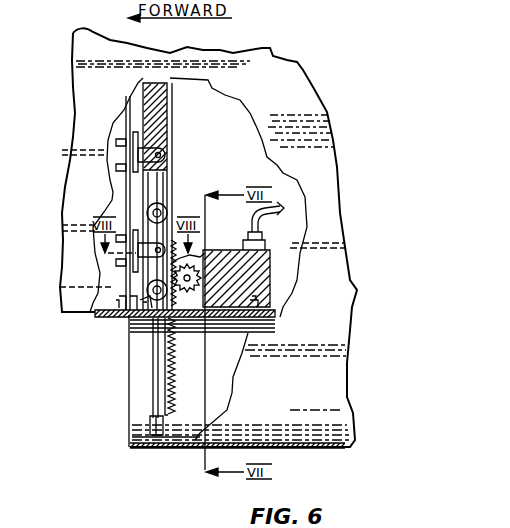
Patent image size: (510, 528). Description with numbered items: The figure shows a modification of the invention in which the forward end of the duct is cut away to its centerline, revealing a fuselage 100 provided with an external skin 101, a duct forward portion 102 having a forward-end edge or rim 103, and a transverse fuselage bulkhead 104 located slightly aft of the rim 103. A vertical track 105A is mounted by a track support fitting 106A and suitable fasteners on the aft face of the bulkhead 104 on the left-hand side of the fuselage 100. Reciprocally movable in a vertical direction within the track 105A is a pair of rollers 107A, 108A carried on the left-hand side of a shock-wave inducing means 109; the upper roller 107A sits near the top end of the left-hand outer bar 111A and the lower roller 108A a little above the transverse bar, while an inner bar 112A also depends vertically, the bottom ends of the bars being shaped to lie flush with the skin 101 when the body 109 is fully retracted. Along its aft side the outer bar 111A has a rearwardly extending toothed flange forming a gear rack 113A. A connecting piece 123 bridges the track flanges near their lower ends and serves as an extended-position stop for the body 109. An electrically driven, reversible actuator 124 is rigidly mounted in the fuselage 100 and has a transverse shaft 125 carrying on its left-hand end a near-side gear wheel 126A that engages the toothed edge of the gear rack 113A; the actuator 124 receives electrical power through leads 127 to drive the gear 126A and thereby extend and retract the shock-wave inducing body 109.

The fuselage 100 is at (322, 88).
The external skin 101 is at (286, 116).
The duct forward portion 102 is at (290, 386).
The forward-end edge or rim 103 is at (150, 421).
The transverse fuselage bulkhead 104 is at (126, 126).
The vertical track 105A is at (178, 99).
The track support fitting 106A is at (156, 147).
The upper roller 107A is at (162, 206).
The lower roller 108A is at (146, 299).
The shock-wave inducing means 109 is at (150, 390).
The outer bar 111A is at (152, 366).
The inner bar 112A is at (146, 432).
The gear rack 113A is at (200, 343).
The connecting piece 123 is at (147, 300).
The electrically driven actuator 124 is at (245, 285).
The shaft 125 is at (200, 284).
The near-side gear wheel 126A is at (180, 273).
The leads 127 is at (272, 222).